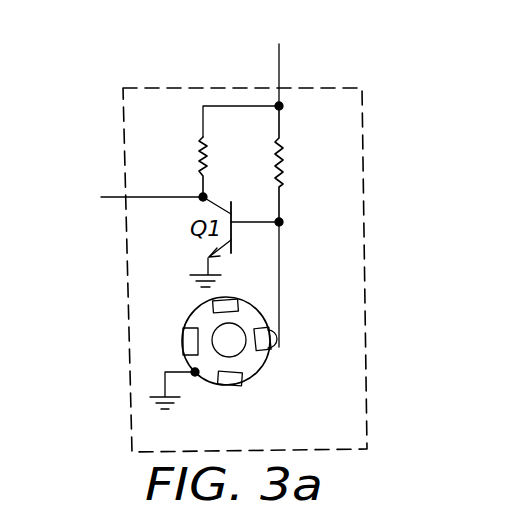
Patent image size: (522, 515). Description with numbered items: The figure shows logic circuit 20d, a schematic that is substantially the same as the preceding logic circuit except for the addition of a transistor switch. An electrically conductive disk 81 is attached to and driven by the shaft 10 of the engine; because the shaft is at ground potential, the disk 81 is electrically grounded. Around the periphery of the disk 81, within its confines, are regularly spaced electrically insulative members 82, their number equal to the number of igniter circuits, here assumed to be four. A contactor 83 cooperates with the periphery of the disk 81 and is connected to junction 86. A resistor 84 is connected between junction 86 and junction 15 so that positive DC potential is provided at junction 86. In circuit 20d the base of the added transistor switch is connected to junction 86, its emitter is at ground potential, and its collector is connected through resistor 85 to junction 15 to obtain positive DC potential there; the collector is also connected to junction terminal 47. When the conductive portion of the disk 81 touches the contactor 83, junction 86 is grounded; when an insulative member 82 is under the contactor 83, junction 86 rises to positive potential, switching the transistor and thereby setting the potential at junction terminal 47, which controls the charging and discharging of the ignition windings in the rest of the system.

The shaft 10 is at (230, 343).
The junction 15 is at (295, 40).
The logic circuit 20d is at (368, 330).
The junction terminal 47 is at (103, 189).
The electrically conductive disk 81 is at (201, 318).
The electrically insulative members 82 is at (268, 352).
The contactor 83 is at (280, 290).
The resistor 84 is at (281, 170).
The resistor 85 is at (205, 165).
The junction 86 is at (282, 222).